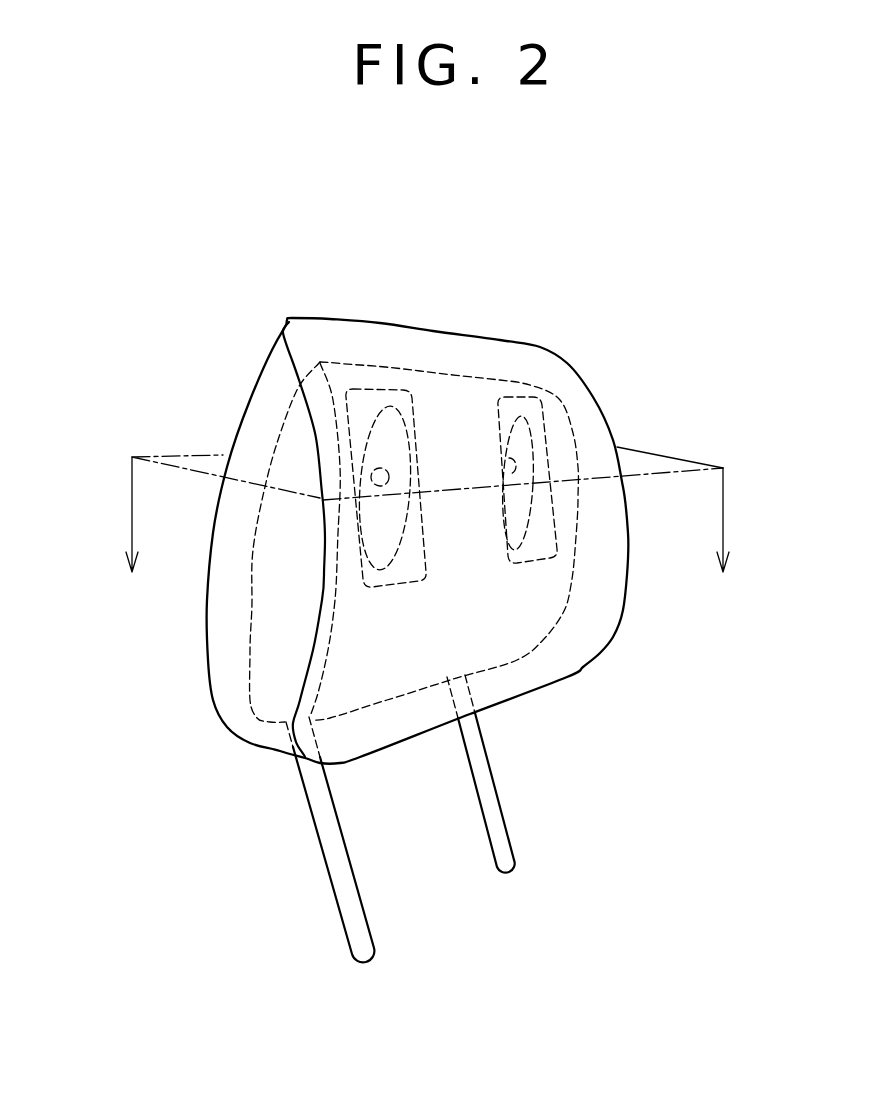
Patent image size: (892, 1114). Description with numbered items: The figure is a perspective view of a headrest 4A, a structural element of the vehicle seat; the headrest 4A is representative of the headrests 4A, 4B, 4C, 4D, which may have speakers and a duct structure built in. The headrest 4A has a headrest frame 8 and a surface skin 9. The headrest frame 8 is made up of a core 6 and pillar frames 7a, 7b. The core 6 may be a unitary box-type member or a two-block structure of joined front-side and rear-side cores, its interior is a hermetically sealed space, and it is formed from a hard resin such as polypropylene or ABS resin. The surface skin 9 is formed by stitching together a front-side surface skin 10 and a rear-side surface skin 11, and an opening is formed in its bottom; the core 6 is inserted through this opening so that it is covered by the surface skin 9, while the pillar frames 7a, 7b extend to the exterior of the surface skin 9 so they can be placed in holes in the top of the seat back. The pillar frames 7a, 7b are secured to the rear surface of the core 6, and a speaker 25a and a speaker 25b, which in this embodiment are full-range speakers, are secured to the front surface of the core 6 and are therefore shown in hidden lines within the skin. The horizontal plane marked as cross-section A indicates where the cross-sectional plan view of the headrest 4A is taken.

The headrest 4A is at (336, 600).
The headrest 4B is at (336, 600).
The headrest 4C is at (336, 600).
The headrest 4D is at (113, 230).
The core 6 is at (493, 620).
The pillar frame 7a is at (358, 928).
The pillar frame 7b is at (500, 845).
The headrest frame 8 is at (420, 1057).
The surface skin 9 is at (183, 251).
The front-side surface skin 10 is at (333, 330).
The rear-side surface skin 11 is at (263, 397).
The speaker 25a is at (520, 533).
The speaker 25b is at (390, 548).
The cross-section A is at (653, 463).